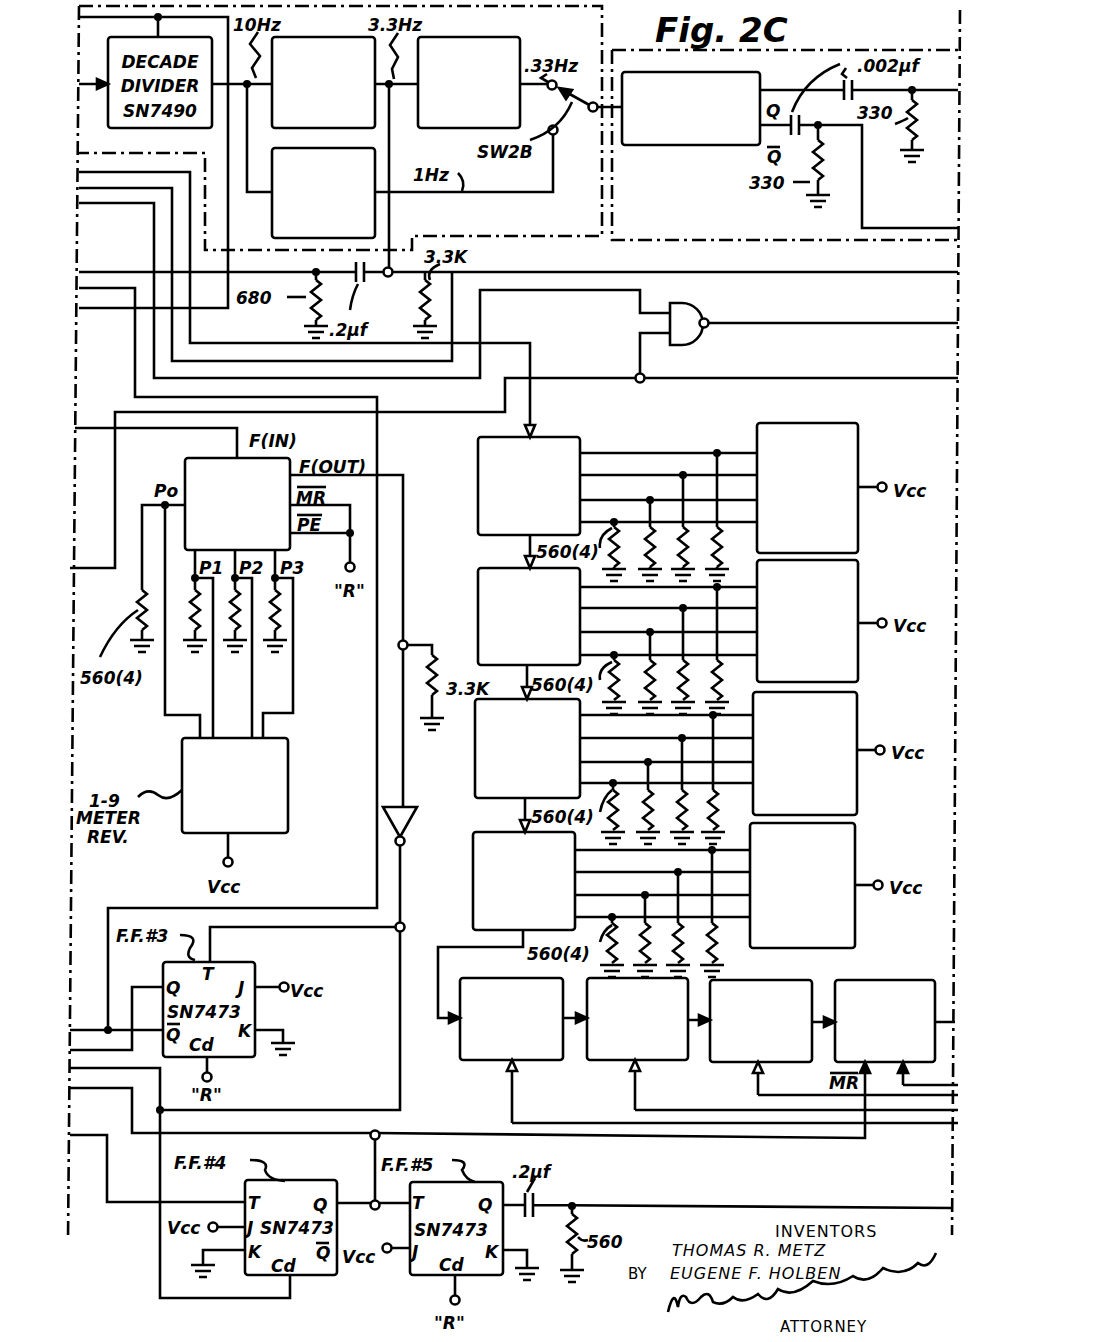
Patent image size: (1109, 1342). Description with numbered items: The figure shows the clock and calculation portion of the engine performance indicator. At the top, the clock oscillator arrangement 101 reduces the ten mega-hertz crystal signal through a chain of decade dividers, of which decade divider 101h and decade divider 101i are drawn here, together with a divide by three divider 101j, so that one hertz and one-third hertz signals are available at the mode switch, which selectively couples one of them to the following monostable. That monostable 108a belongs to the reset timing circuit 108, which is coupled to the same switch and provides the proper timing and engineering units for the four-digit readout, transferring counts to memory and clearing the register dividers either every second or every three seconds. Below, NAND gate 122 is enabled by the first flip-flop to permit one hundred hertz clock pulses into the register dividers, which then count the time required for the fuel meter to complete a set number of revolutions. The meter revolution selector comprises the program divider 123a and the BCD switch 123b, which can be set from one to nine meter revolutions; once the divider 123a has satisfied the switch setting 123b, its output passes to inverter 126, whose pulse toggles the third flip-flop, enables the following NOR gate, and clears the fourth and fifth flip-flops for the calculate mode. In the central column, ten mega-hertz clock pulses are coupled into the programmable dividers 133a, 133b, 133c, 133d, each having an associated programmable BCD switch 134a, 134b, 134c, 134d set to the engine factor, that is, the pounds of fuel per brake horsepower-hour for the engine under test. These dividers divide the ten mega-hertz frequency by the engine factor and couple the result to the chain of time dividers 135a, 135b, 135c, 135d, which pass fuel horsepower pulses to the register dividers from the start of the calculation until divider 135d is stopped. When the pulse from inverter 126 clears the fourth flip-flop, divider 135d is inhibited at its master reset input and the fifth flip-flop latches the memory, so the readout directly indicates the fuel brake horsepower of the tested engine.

The clock oscillator arrangement 101 is at (524, 240).
The decade divider 101h is at (375, 222).
The decade divider 101i is at (468, 128).
The divide by three divider 101j is at (316, 37).
The reset timing circuit 108 is at (793, 240).
The monostable 108a is at (714, 135).
The NAND gate 122 is at (697, 318).
The program divider 123a is at (186, 468).
The BCD switch 123b is at (288, 775).
The inverter 126 is at (383, 816).
The divider 133a is at (478, 478).
The divider 133b is at (478, 605).
The divider 133c is at (476, 758).
The divider 133d is at (474, 856).
The programmable BCD switch 134a is at (858, 427).
The programmable BCD switch 134b is at (858, 590).
The programmable BCD switch 134c is at (852, 715).
The programmable BCD switch 134d is at (848, 850).
The time divider 135a is at (480, 1055).
The time divider 135b is at (613, 1055).
The time divider 135c is at (733, 1055).
The time divider 135d is at (857, 982).